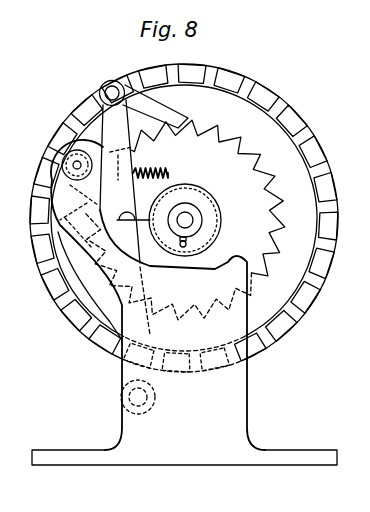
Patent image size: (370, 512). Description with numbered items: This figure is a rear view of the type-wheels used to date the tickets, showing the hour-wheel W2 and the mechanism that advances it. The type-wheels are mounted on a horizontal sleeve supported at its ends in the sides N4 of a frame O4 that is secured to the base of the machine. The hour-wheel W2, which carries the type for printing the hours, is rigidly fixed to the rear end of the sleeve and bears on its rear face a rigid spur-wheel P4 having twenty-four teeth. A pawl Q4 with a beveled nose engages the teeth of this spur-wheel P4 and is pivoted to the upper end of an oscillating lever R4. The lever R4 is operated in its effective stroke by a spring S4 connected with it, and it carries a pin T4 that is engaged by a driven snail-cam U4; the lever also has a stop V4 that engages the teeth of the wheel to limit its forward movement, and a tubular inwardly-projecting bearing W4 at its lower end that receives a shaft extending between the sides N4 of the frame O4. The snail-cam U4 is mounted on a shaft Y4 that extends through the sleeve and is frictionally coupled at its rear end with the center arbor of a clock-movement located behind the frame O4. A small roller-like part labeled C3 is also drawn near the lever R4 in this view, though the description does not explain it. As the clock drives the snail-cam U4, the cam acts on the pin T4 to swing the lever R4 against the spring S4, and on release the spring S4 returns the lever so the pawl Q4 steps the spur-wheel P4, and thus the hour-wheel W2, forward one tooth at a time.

The frame O4 is at (184, 457).
The sides of frame N4 is at (158, 295).
The hour-wheel W2 is at (184, 218).
The spur-wheel P4 is at (185, 220).
The shaft Y4 is at (185, 220).
The snail-cam U4 is at (172, 242).
The pin T4 is at (130, 206).
The spring S4 is at (150, 161).
The pawl Q4 is at (167, 112).
The oscillating lever R4 is at (120, 172).
The roller C3 is at (81, 156).
The stop V4 is at (95, 208).
The tubular bearing W4 is at (123, 398).